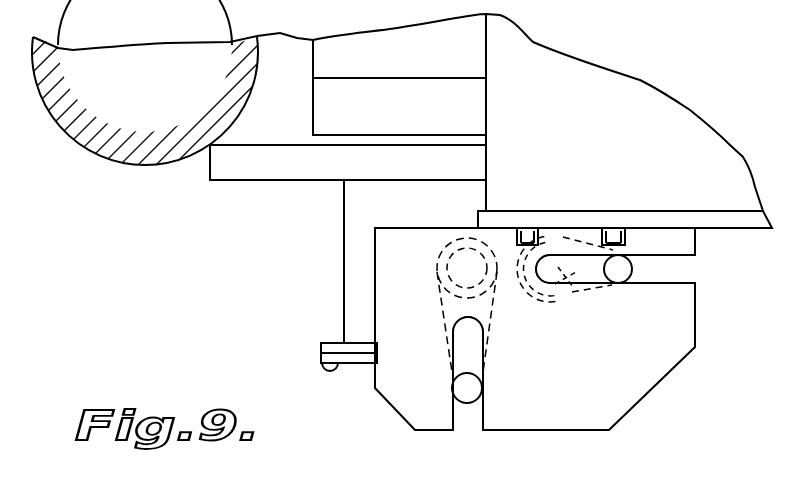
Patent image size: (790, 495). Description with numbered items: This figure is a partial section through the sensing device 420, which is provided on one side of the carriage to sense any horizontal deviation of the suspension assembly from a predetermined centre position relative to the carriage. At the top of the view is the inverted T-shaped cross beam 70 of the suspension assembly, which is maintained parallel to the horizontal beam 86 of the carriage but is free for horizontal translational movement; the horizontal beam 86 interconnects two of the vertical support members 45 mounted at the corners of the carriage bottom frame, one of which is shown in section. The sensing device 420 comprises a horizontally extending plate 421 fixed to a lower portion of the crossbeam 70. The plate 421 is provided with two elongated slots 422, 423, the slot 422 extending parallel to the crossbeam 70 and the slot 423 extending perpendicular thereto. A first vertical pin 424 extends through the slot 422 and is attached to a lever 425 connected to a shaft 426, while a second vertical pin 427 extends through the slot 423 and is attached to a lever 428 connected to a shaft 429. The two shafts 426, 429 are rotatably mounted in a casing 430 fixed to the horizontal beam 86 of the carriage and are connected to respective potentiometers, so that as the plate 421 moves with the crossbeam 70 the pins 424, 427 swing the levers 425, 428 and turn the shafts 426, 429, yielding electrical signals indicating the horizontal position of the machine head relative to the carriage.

The vertical support member 45 is at (146, 160).
The cross beam 70 is at (680, 117).
The horizontal beam 86 is at (278, 172).
The sensing device 420 is at (325, 281).
The plate 421 is at (638, 392).
The elongated slot 422 is at (686, 285).
The elongated slot 423 is at (473, 418).
The first vertical pin 424 is at (633, 268).
The lever 425 is at (583, 262).
The shaft 426 is at (570, 291).
The second vertical pin 427 is at (474, 382).
The lever 428 is at (478, 330).
The shaft 429 is at (447, 271).
The casing 430 is at (344, 320).